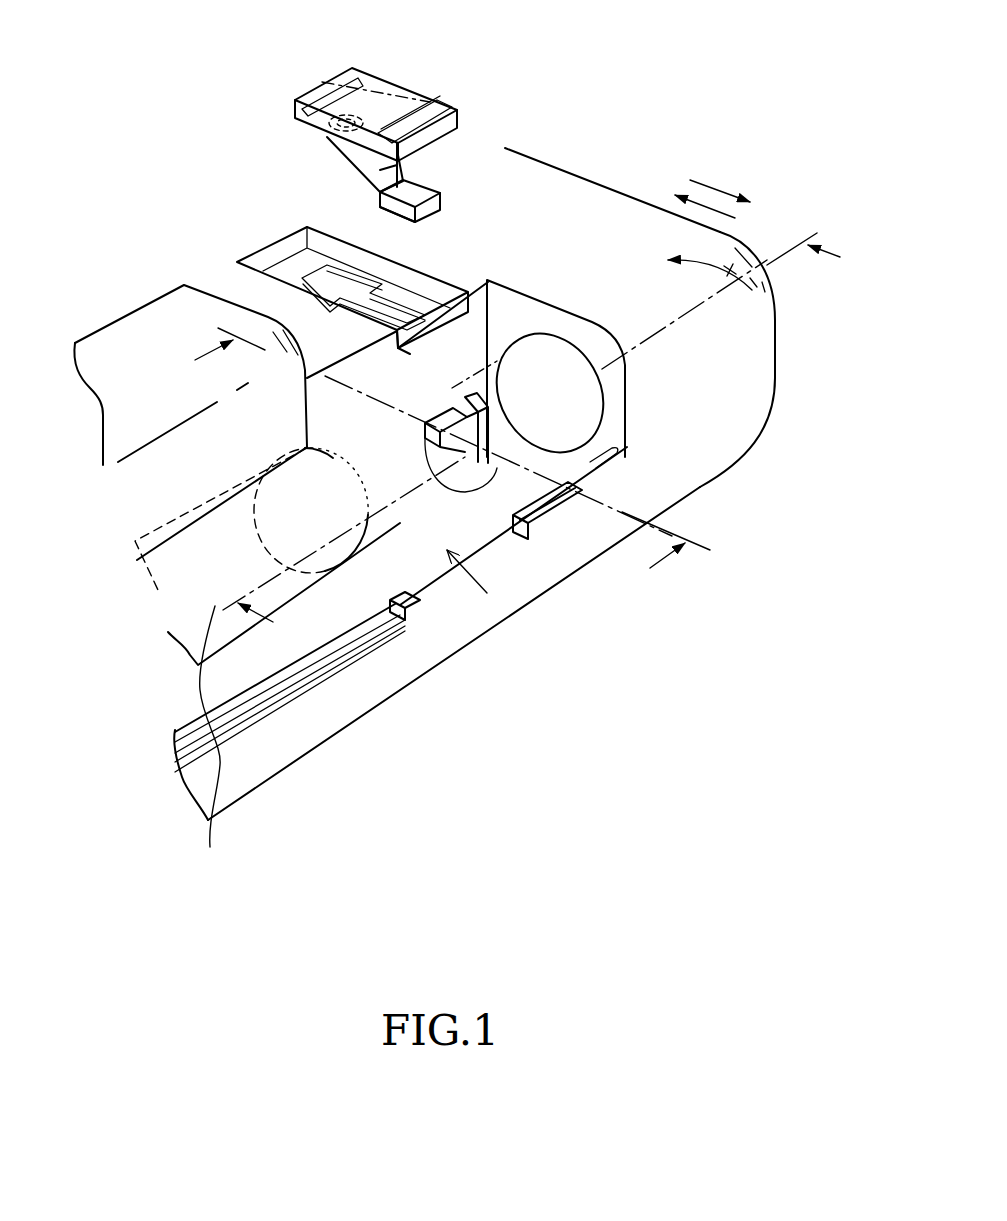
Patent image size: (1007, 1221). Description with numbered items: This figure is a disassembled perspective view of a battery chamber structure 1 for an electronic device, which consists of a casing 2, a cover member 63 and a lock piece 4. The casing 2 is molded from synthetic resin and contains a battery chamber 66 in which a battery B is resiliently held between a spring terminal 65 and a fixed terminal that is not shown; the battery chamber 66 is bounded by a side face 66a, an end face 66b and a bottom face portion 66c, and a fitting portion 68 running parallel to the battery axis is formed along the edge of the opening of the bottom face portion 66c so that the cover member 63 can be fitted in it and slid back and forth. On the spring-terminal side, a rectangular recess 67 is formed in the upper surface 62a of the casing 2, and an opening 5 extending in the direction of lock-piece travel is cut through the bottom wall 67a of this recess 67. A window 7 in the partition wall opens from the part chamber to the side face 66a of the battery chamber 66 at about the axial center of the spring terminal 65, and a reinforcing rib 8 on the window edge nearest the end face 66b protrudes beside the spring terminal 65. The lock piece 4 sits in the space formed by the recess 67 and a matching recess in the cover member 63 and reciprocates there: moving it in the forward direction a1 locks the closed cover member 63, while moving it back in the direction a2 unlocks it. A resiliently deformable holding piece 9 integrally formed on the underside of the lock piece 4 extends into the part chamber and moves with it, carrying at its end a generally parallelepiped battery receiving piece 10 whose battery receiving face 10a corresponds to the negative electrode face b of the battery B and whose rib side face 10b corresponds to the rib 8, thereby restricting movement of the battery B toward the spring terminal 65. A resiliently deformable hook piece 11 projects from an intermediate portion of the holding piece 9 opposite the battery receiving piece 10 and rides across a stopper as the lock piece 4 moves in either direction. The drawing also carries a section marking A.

The battery chamber structure 1 is at (553, 97).
The casing 2 is at (775, 298).
The lock piece 4 is at (394, 97).
The opening 5 is at (352, 262).
The window 7 is at (445, 425).
The reinforcing rib 8 is at (473, 421).
The holding piece 9 is at (380, 170).
The battery receiving piece 10 is at (436, 218).
The battery receiving face 10a is at (393, 208).
The rib side face 10b is at (432, 186).
The hook piece 11 is at (327, 137).
The upper surface 62a is at (587, 203).
The cover member 63 is at (128, 335).
The spring terminal 65 is at (553, 480).
The battery chamber 66 is at (467, 540).
The side face 66a is at (400, 356).
The end face 66b is at (566, 322).
The bottom face portion 66c is at (430, 575).
The recess 67 is at (366, 260).
The bottom wall 67a is at (286, 270).
The fitting portion 68 is at (573, 567).
The forward direction a1 is at (718, 188).
The backward direction a2 is at (735, 227).
The negative electrode face b is at (333, 460).
The section line A- A is at (441, 461).
The battery B is at (533, 560).